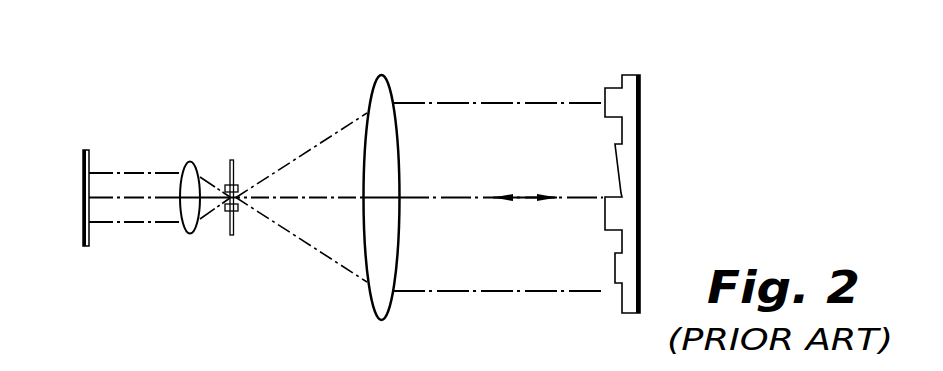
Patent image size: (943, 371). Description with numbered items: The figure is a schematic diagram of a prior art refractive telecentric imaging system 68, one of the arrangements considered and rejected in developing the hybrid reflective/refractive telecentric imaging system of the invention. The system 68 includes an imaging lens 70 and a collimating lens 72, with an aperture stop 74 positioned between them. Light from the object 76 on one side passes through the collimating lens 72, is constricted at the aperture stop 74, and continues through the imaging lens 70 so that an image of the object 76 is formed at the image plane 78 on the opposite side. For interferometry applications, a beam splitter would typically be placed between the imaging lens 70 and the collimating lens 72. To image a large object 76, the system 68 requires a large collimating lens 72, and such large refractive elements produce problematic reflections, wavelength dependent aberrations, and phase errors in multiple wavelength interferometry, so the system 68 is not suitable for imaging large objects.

The refractive telecentric imaging system 68 is at (217, 92).
The imaging lens 70 is at (182, 227).
The collimating lens 72 is at (370, 295).
The aperture stop 74 is at (230, 231).
The object 76 is at (640, 197).
The image plane 78 is at (83, 235).